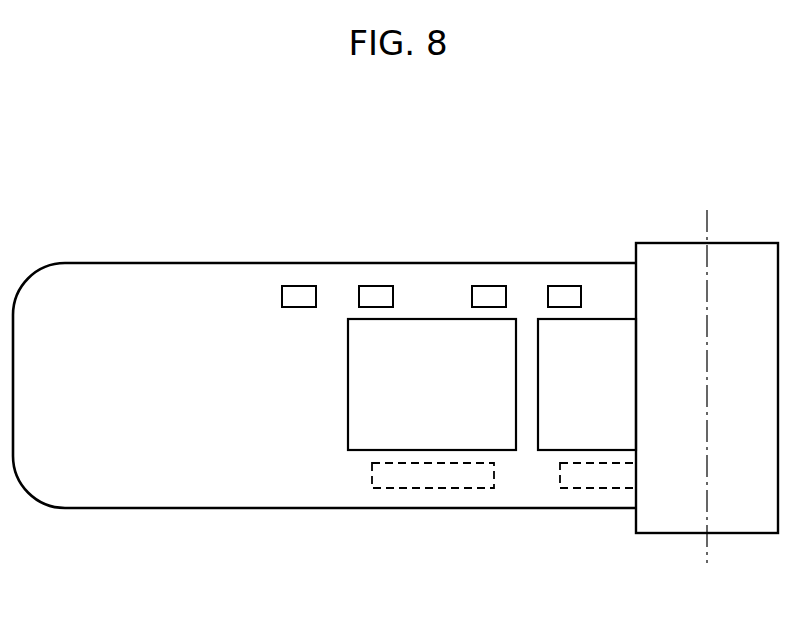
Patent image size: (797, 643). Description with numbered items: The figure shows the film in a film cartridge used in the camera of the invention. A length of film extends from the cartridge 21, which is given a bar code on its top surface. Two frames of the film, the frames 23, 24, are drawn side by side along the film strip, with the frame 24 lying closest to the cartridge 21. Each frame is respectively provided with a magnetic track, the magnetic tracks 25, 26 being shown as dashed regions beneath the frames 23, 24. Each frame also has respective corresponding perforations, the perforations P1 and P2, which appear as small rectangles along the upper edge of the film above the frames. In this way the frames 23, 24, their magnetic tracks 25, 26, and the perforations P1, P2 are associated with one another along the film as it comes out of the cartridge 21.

The cartridge 21 is at (683, 525).
The frame 23 is at (437, 333).
The frame 24 is at (606, 335).
The magnetic track 25 is at (440, 490).
The magnetic track 26 is at (587, 490).
The perforation P1 is at (380, 284).
The perforation P2 is at (298, 284).